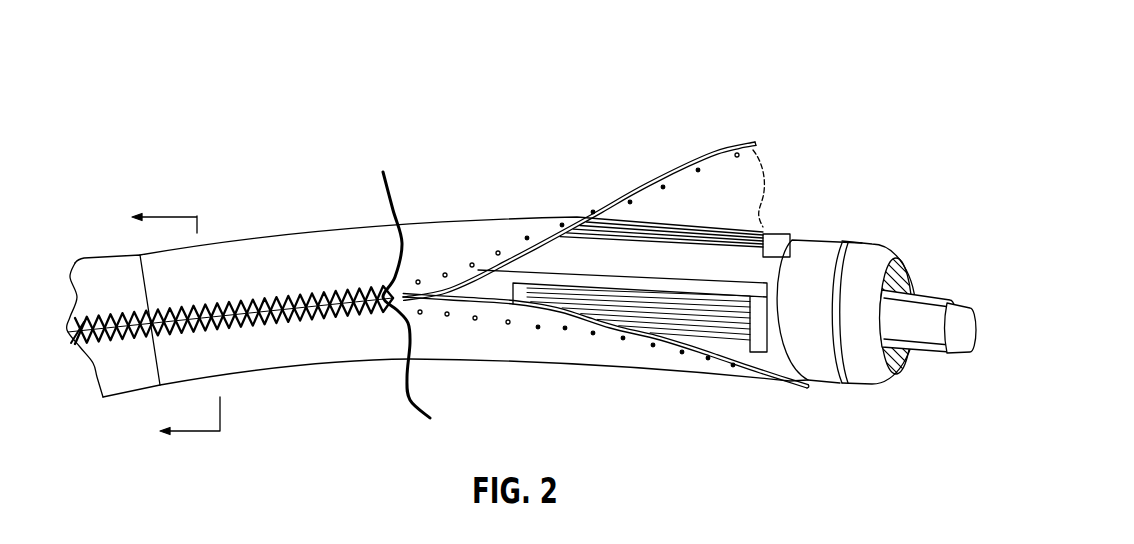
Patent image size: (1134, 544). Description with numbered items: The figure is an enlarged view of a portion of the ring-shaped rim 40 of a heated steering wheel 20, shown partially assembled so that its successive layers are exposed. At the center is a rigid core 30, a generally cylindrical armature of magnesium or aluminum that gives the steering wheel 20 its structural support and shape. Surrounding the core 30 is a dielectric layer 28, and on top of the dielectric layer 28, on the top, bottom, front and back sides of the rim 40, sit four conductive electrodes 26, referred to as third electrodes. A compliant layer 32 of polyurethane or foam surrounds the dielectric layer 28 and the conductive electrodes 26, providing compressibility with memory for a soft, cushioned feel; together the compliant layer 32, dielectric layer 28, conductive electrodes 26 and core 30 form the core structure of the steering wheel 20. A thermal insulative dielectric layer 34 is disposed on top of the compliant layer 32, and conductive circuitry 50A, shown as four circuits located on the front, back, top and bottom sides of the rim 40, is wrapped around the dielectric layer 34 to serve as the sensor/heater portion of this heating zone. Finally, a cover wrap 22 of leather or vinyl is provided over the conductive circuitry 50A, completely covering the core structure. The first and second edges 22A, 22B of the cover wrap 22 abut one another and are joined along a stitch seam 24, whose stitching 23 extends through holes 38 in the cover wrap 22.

The steering wheel 20 is at (217, 200).
The cover wrap 22 is at (337, 240).
The first edge 22A is at (708, 150).
The second edge 22B is at (777, 377).
The stitching 23 is at (410, 393).
The stitch seam 24 is at (282, 297).
The conductive electrodes 26 is at (921, 290).
The dielectric layer 28 is at (960, 303).
The core 30 is at (973, 343).
The compliant layer 32 is at (880, 260).
The thermal insulative dielectric layer 34 is at (827, 250).
The holes 38 is at (418, 282).
The rim 40 is at (98, 280).
The conductive circuitry 50A is at (692, 285).